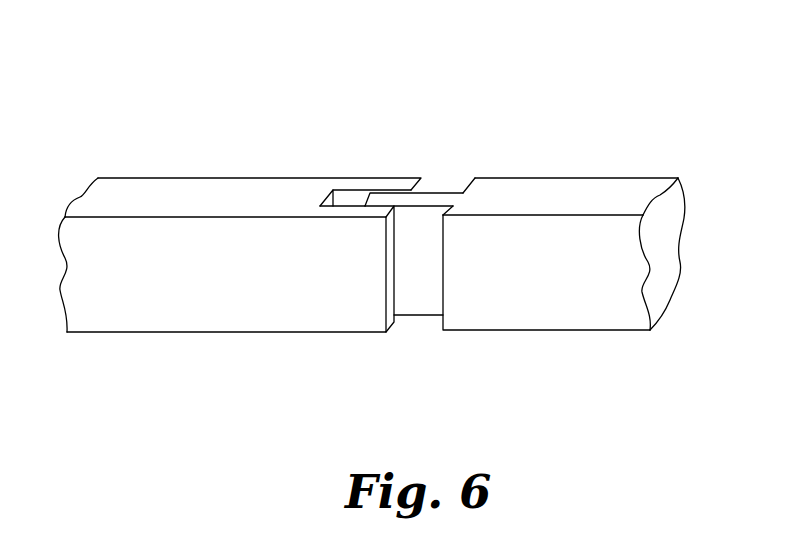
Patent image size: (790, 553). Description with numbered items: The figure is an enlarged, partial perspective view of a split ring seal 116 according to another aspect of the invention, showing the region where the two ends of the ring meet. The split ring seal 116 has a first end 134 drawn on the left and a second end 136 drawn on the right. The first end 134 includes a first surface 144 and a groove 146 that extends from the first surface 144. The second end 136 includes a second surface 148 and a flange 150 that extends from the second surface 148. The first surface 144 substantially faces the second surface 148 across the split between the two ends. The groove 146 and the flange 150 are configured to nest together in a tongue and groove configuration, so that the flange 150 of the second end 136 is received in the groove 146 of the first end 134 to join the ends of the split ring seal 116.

The split ring seal 116 is at (397, 222).
The first end 134 is at (203, 342).
The second end 136 is at (553, 338).
The first surface 144 is at (420, 182).
The groove 146 is at (349, 193).
The second surface 148 is at (468, 184).
The flange 150 is at (423, 204).